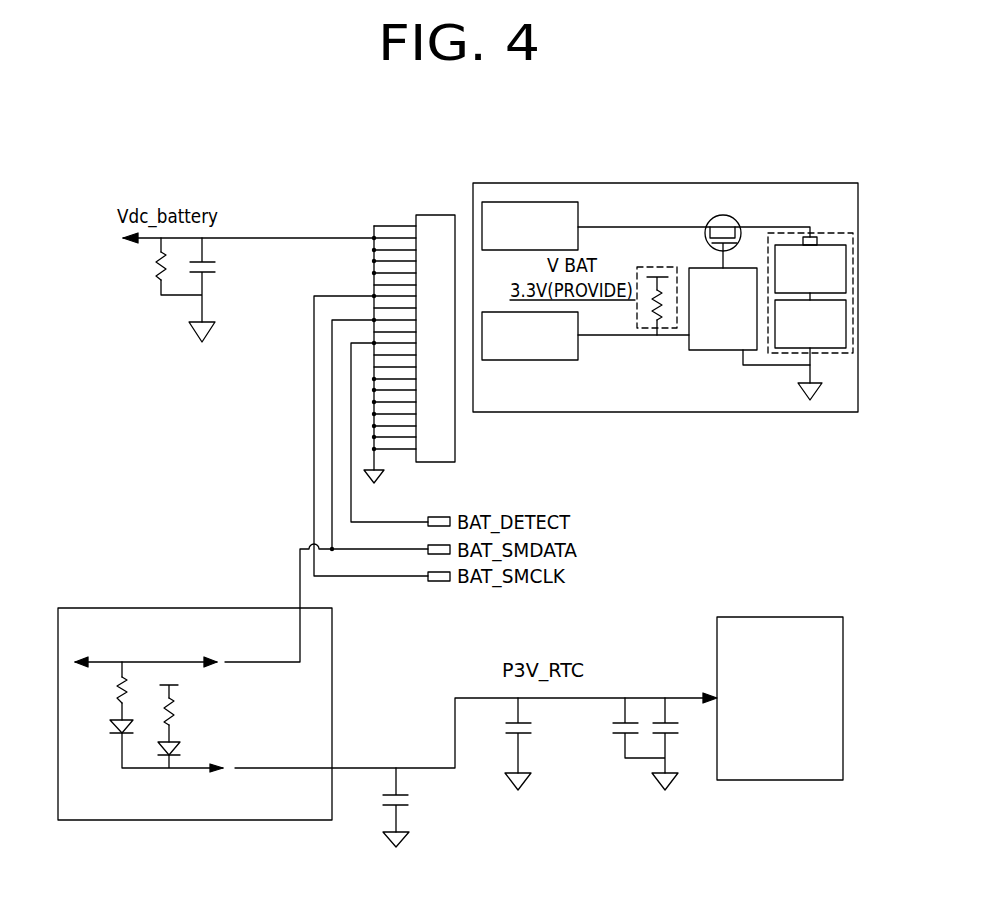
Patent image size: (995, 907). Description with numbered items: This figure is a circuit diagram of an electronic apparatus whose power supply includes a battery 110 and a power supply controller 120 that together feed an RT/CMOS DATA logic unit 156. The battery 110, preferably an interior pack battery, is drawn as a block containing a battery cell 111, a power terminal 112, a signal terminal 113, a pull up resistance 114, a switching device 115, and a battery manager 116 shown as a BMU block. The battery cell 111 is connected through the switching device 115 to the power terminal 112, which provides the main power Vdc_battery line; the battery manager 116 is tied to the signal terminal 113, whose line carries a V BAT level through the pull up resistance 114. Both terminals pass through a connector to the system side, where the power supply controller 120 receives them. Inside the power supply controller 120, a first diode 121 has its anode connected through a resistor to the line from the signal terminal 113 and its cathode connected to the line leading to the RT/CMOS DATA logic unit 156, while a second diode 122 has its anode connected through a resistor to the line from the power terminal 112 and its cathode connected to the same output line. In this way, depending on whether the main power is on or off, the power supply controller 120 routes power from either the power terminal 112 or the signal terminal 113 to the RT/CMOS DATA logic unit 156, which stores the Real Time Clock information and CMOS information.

The battery 110 is at (701, 183).
The battery cell 111 is at (829, 232).
The power terminal 112 is at (574, 200).
The signal terminal 113 is at (567, 362).
The pull up resistance 114 is at (654, 267).
The switching device 115 is at (724, 214).
The battery manager 116 is at (749, 266).
The power supply controller 120 is at (195, 688).
The first diode 121 is at (112, 726).
The second diode 122 is at (184, 746).
The RT/CMOS DATA logic unit 156 is at (779, 617).